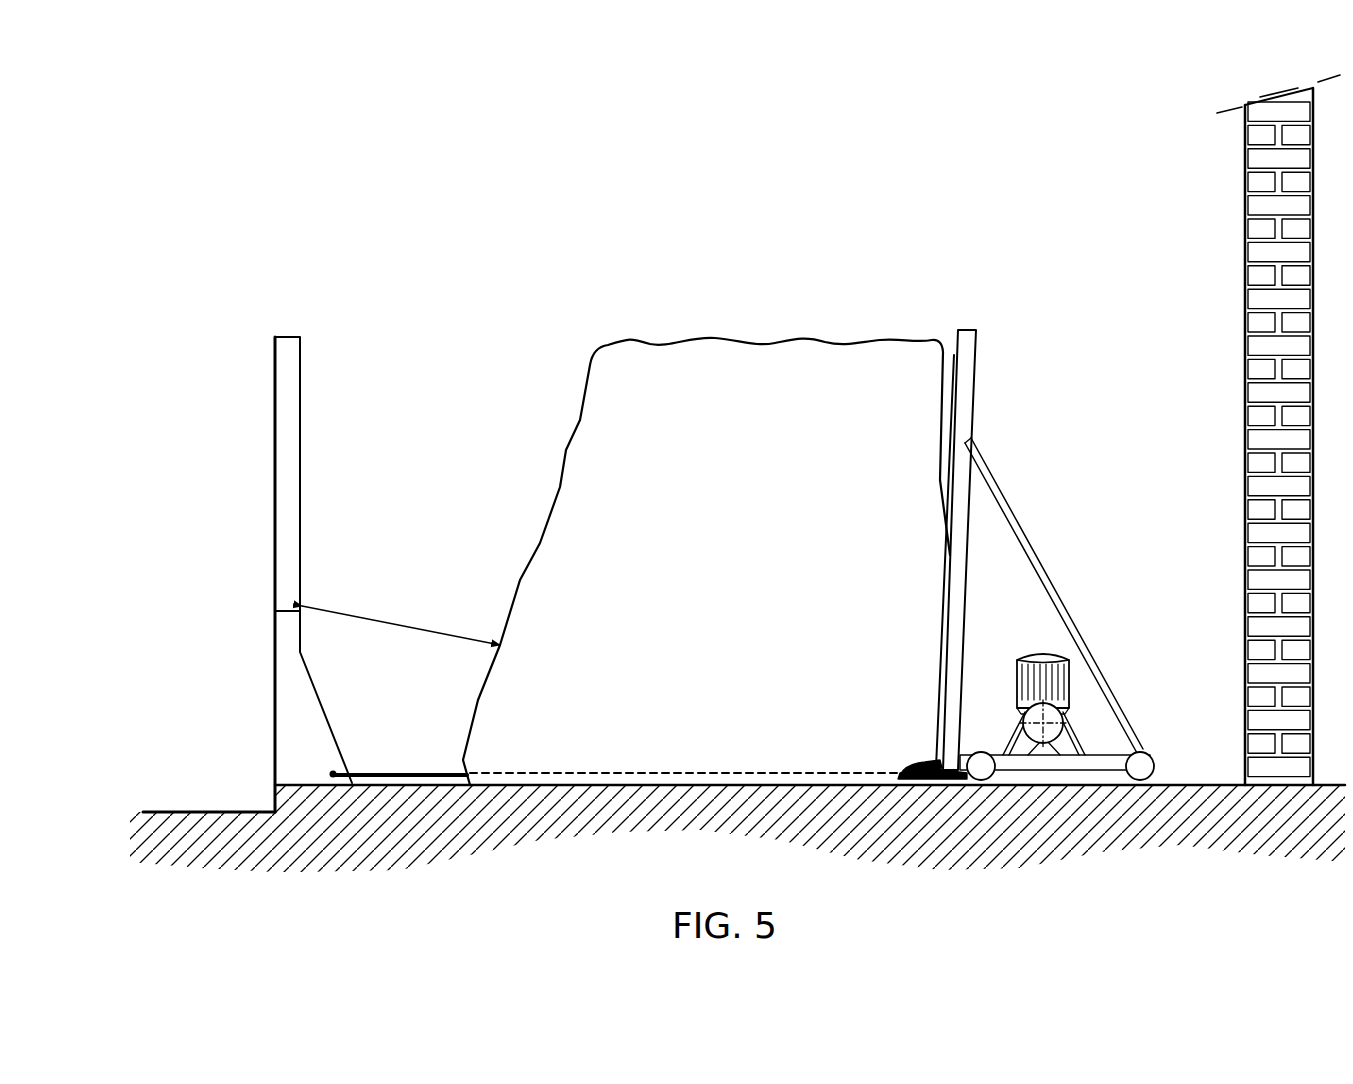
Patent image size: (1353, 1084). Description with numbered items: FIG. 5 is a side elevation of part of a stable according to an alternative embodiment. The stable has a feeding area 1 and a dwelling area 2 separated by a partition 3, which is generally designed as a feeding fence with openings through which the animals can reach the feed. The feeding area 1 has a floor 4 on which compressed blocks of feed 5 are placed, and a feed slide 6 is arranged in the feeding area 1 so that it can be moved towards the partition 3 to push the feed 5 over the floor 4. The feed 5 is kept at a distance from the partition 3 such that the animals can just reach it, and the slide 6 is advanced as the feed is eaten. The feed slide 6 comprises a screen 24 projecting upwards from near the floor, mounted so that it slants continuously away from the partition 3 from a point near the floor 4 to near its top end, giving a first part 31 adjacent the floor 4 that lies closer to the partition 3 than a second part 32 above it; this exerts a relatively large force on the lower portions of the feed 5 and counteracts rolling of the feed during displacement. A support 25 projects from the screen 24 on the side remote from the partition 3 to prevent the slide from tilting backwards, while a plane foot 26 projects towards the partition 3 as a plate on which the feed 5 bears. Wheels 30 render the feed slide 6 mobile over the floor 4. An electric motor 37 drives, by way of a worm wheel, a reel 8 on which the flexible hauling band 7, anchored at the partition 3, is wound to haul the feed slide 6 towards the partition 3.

The feeding area 1 is at (446, 424).
The dwelling area 2 is at (184, 805).
The partition 3 is at (292, 333).
The floor 4 is at (870, 787).
The feed 5 is at (755, 566).
The feed slide 6 is at (1002, 484).
The hauling element 7 is at (433, 772).
The reel 8 is at (1053, 735).
The screen 24 is at (968, 390).
The support 25 is at (1002, 484).
The foot 26 is at (920, 764).
The wheels 30 is at (983, 752).
The first part 31 is at (942, 748).
The second part 32 is at (956, 358).
The electric motor 37 is at (1046, 655).